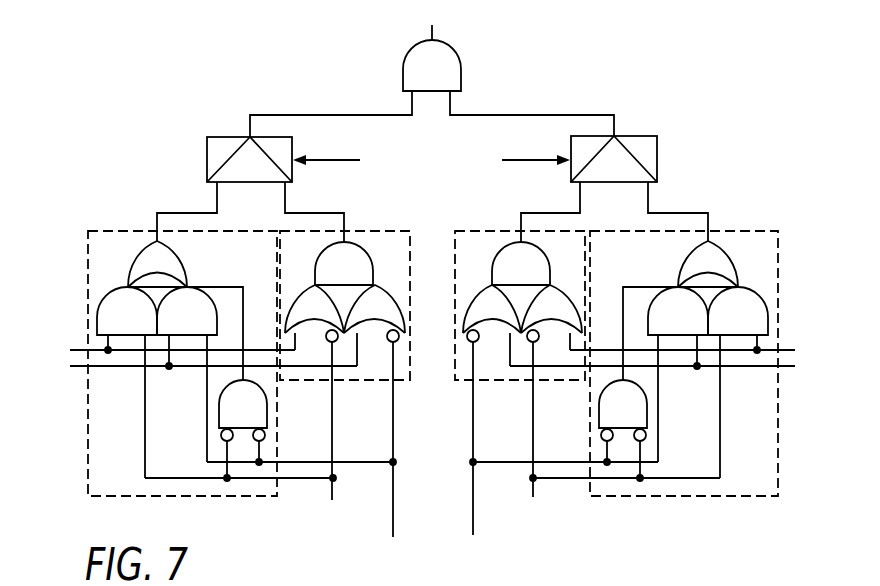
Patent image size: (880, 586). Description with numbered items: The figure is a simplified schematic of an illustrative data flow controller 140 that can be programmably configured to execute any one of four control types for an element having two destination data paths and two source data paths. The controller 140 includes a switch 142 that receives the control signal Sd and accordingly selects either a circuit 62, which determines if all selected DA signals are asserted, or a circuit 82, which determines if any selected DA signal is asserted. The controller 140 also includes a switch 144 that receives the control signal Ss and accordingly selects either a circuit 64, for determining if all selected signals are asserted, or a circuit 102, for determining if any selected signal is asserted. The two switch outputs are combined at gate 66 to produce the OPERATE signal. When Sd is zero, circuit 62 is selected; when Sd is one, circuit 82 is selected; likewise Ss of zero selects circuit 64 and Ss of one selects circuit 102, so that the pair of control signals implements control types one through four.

The data flow controller 140 is at (676, 30).
The OPERATE AND gate 66 is at (461, 73).
The switch 142 is at (214, 137).
The switch 144 is at (658, 160).
The circuit 82 is at (118, 231).
The circuit 62 is at (379, 231).
The circuit 64 is at (480, 229).
The circuit 102 is at (762, 229).